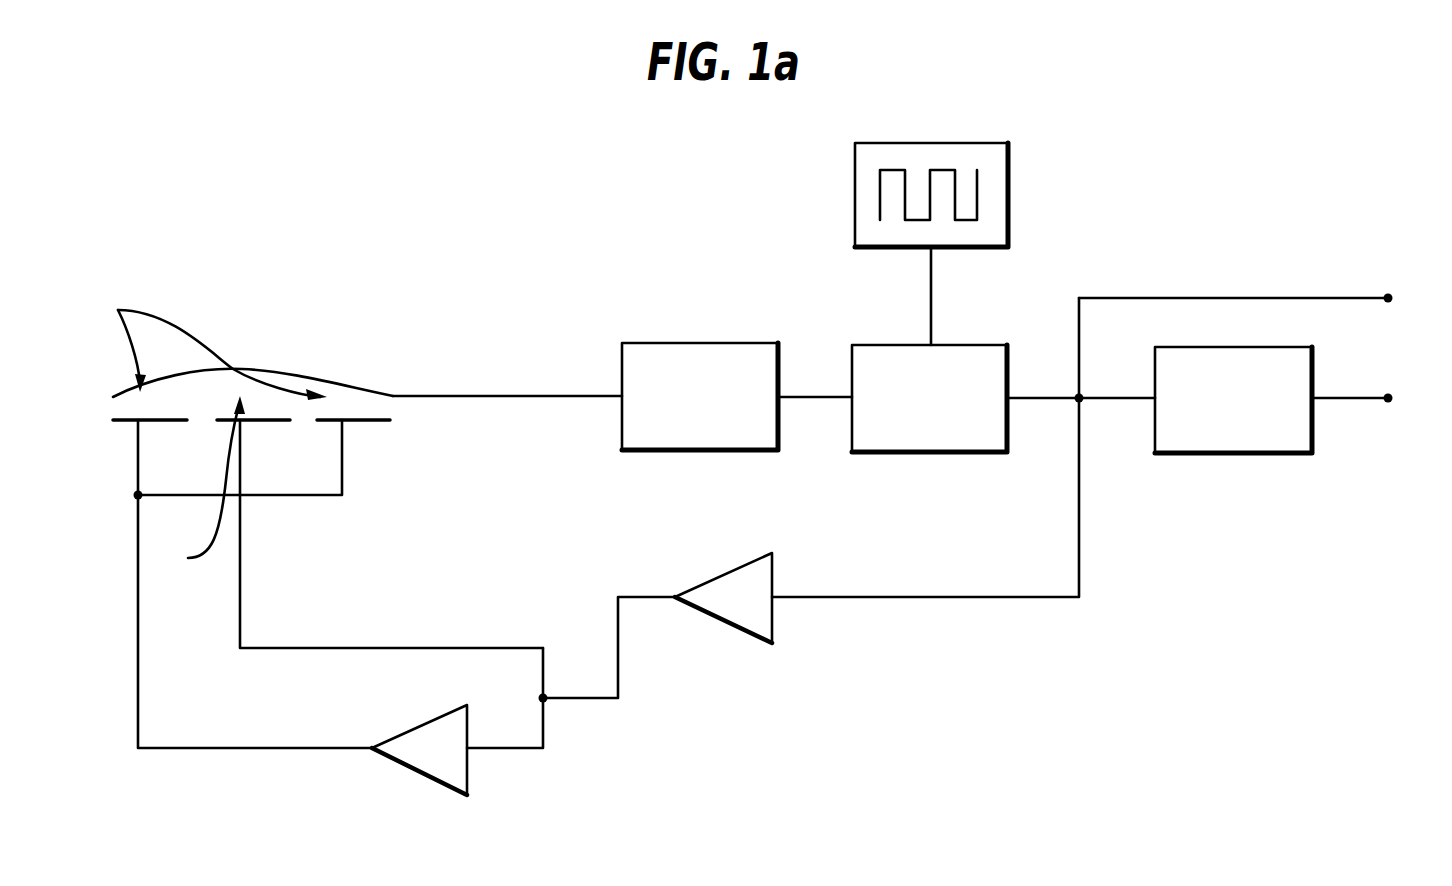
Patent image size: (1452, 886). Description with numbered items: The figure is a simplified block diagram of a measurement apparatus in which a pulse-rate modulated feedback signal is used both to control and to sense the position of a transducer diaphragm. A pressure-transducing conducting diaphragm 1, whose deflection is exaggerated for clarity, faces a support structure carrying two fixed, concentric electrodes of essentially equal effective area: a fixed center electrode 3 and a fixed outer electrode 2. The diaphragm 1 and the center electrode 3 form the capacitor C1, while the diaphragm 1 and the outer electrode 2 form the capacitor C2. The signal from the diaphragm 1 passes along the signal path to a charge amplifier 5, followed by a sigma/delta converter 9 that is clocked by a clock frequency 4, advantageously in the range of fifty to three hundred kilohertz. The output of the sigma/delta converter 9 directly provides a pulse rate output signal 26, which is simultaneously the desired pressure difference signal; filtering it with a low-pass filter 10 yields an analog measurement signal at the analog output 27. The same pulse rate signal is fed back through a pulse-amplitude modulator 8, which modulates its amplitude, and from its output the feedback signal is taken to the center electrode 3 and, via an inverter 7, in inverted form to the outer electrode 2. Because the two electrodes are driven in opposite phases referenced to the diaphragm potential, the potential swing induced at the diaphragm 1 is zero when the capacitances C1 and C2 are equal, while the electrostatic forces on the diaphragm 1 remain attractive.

The pressure-transducing conducting diaphragm 1 is at (260, 370).
The fixed outer electrode 2 is at (132, 423).
The fixed center electrode 3 is at (250, 423).
The clock frequency 4 is at (902, 253).
The charge amplifier 5 is at (717, 342).
The inverter 7 is at (450, 793).
The pulse-amplitude modulator 8 is at (755, 643).
The sigma/delta converter 9 is at (900, 453).
The low-pass filter 10 is at (1205, 453).
The pulse rate output signal 26 is at (1388, 298).
The analog output 27 is at (1388, 398).
The capacitor C1 is at (196, 486).
The capacitor C2 is at (200, 342).